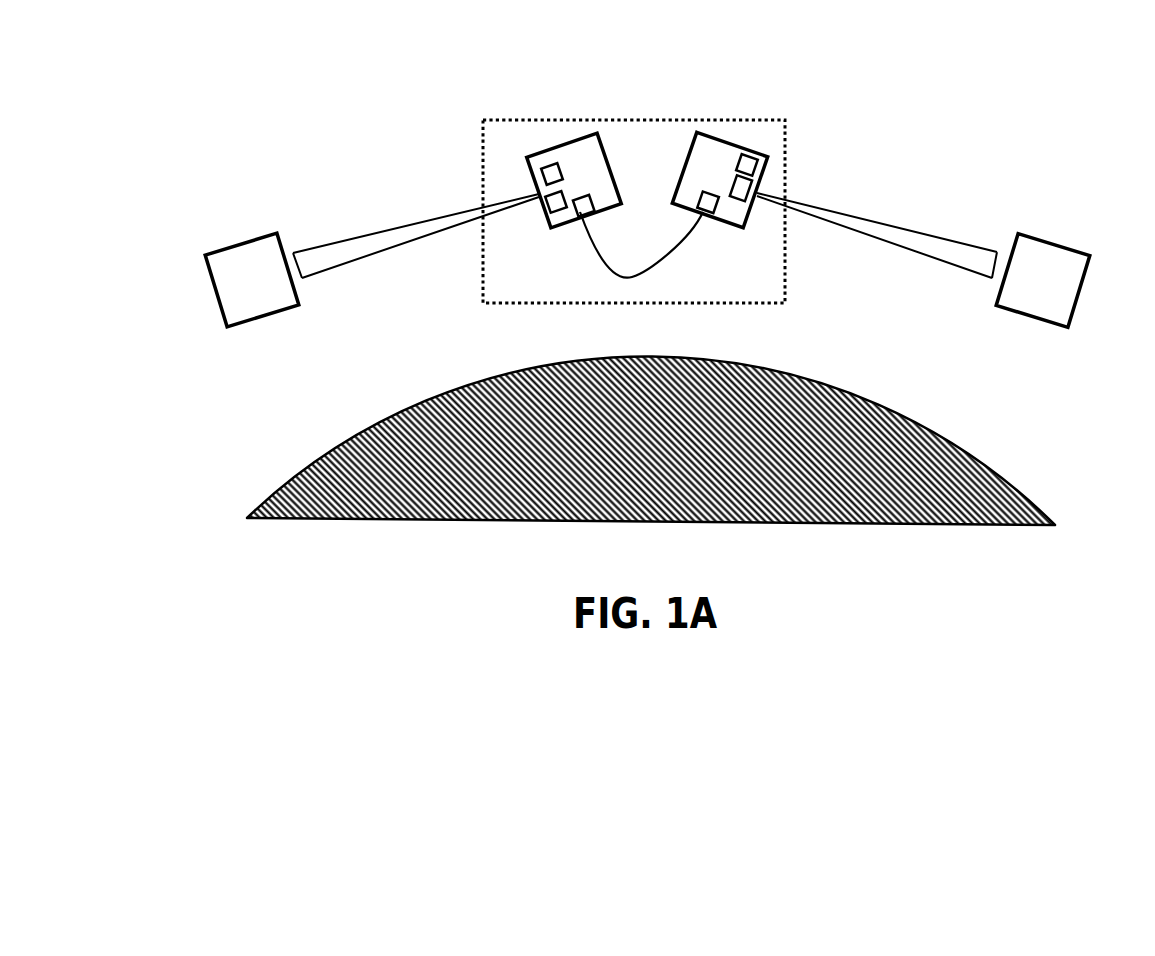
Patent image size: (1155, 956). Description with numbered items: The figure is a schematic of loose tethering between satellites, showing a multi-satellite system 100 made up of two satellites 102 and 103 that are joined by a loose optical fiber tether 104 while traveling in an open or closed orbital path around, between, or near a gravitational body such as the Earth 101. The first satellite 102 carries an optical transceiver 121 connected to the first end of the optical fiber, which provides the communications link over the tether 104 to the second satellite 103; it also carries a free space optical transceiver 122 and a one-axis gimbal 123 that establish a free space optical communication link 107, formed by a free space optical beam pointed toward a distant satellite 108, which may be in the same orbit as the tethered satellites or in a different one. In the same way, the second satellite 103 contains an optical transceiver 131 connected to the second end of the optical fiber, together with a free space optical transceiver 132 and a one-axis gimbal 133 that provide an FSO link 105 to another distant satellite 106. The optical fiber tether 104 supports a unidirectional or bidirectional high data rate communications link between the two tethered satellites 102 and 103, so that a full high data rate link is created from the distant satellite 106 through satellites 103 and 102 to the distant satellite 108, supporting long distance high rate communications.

The multi-satellite system 100 is at (623, 116).
The Earth 101 is at (307, 463).
The first satellite 102 is at (560, 126).
The second satellite 103 is at (730, 126).
The loose optical fiber tether 104 is at (670, 267).
The FSO link 105 is at (900, 218).
The distant satellite 106 is at (1052, 228).
The free space optical communication link 107 is at (412, 208).
The distant satellite 108 is at (240, 235).
The optical transceiver 121 is at (580, 213).
The free space optical transceiver 122 is at (545, 175).
The one-axis gimbal 123 is at (542, 212).
The optical transceiver 131 is at (717, 211).
The free space optical transceiver 132 is at (727, 182).
The one-axis gimbal 133 is at (740, 160).